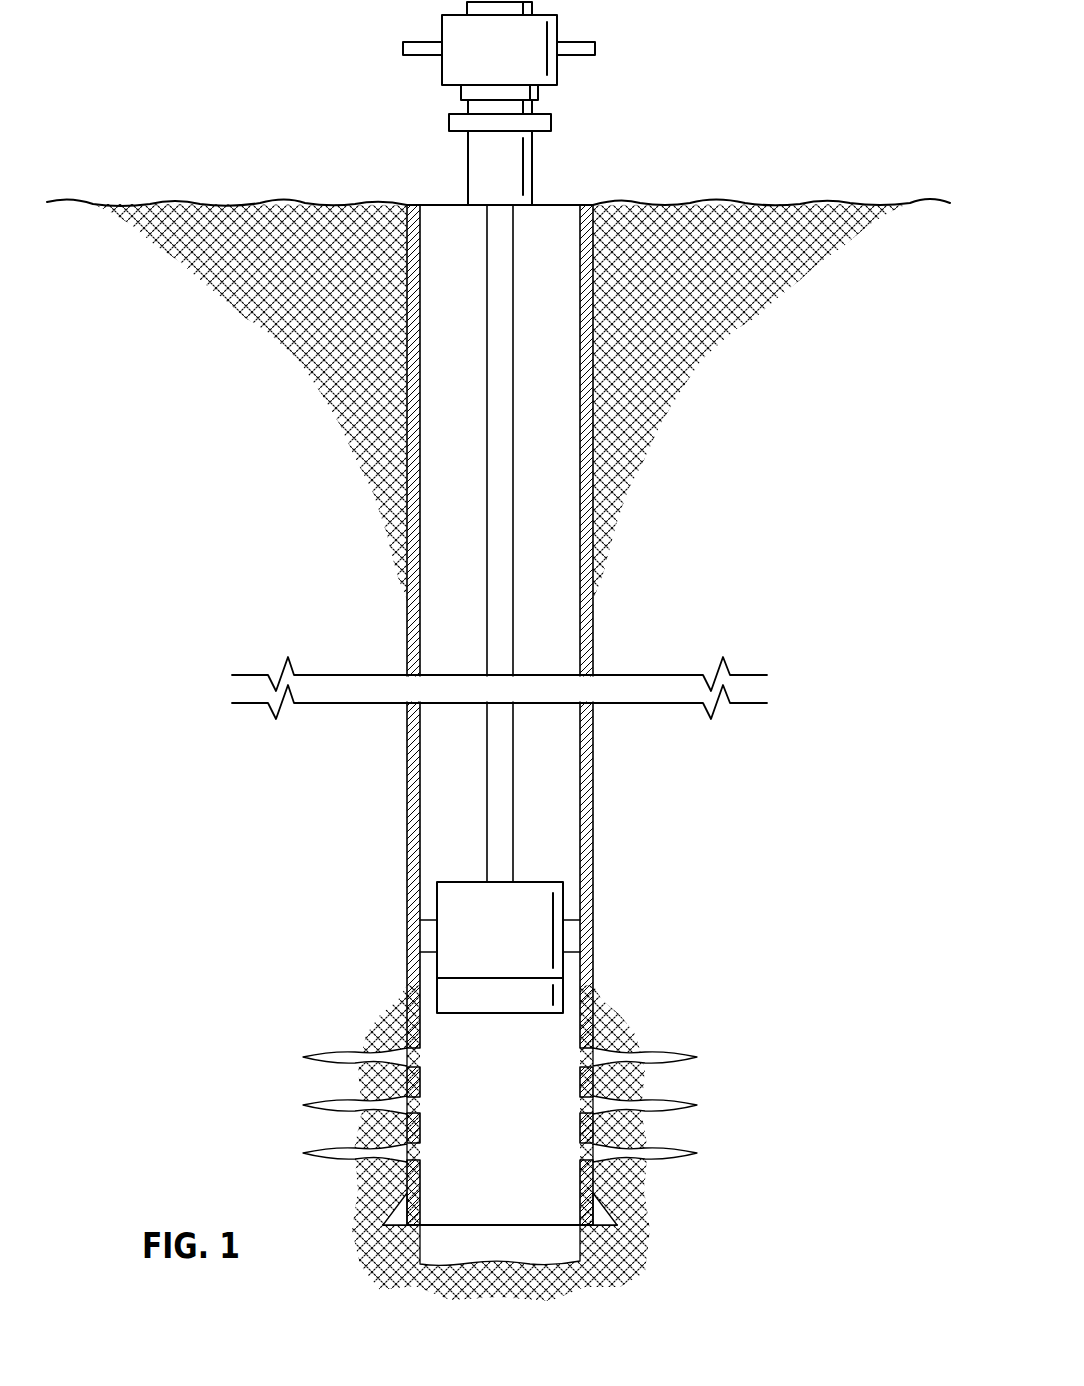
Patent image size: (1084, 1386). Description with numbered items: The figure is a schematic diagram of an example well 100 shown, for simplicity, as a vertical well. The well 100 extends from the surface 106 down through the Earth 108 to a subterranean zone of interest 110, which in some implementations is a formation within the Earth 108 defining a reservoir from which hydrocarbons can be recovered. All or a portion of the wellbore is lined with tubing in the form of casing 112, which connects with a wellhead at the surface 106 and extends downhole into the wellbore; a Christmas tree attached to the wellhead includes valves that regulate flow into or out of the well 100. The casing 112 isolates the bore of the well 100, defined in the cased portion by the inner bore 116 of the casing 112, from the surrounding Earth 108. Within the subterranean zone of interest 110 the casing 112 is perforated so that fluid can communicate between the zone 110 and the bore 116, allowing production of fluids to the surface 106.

The well 100 is at (282, 91).
The surface 106 is at (82, 203).
The Earth 108 is at (272, 432).
The subterranean zone of interest 110 is at (772, 1031).
The casing 112 is at (407, 640).
The inner bore 116 is at (562, 637).